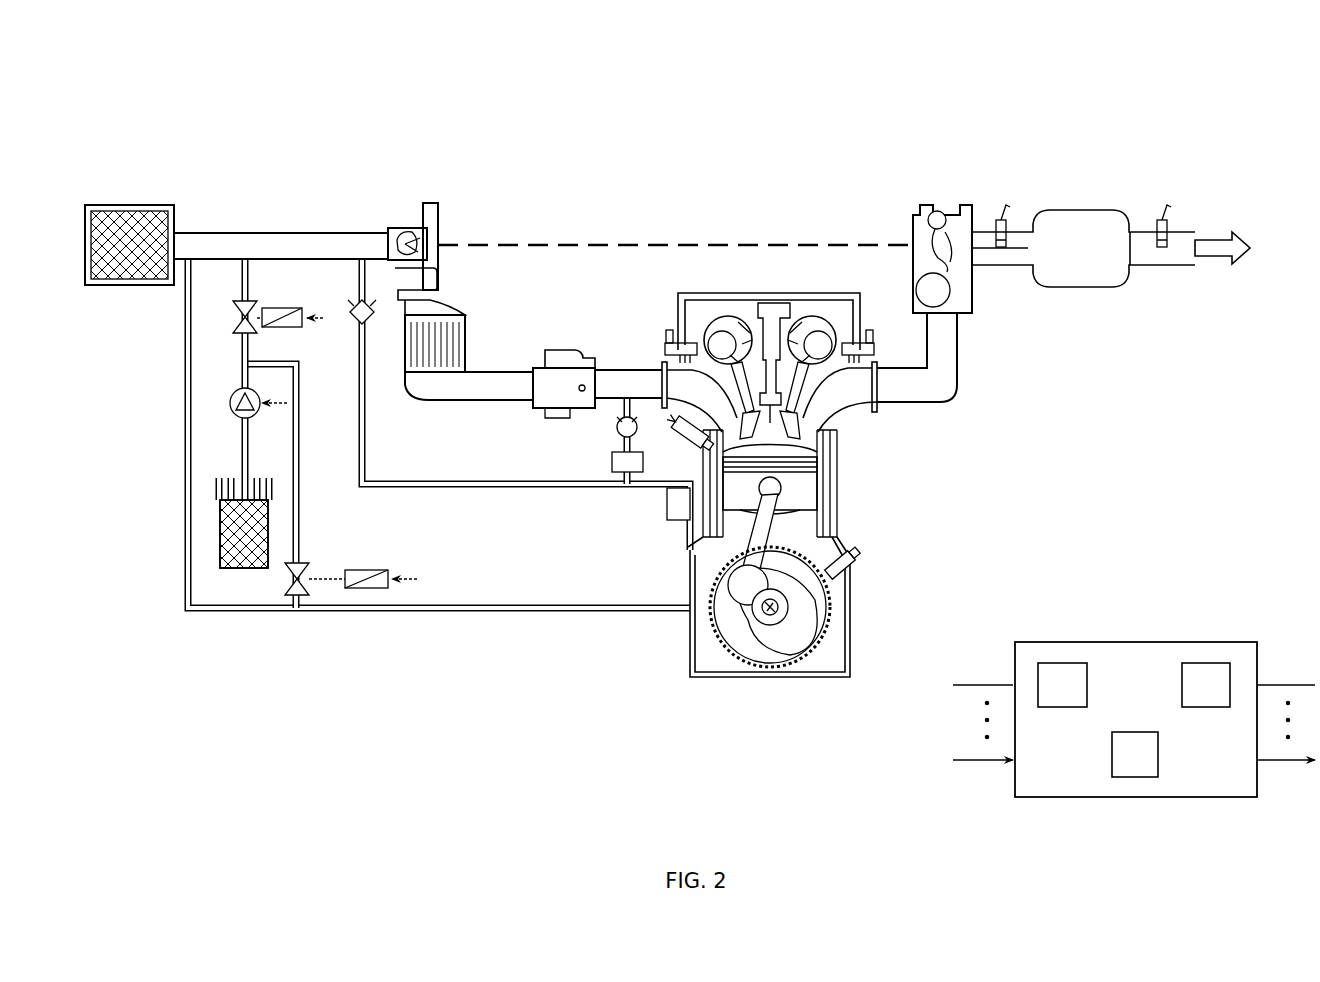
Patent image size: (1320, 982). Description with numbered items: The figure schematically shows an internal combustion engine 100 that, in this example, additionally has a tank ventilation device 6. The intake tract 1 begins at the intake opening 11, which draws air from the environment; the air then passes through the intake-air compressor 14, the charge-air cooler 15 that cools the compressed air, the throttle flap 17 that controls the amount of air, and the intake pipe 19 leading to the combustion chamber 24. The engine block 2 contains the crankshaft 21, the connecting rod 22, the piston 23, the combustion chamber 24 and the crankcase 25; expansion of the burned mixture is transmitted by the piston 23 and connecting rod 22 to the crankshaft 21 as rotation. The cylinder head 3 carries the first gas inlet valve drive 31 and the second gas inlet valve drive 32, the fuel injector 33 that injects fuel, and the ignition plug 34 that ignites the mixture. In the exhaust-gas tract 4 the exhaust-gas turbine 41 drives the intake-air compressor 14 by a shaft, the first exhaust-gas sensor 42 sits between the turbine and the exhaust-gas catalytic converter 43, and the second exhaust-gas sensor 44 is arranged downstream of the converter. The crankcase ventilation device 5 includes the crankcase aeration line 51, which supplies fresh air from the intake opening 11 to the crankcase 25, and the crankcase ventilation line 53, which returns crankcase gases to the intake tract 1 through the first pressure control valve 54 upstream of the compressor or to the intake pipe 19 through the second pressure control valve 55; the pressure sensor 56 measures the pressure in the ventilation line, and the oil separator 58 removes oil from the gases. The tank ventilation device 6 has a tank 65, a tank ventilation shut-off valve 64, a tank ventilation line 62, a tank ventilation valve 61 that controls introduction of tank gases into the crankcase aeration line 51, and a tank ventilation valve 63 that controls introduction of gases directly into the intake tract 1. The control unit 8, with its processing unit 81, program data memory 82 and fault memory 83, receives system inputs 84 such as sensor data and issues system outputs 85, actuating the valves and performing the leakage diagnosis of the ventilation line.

The internal combustion engine 100 is at (510, 146).
The intake tract 1 is at (288, 214).
The intake opening 11 is at (128, 205).
The intake-air compressor 14 is at (440, 213).
The charge-air cooler 15 is at (470, 345).
The throttle flap 17 is at (572, 352).
The intake pipe 19 is at (605, 370).
The engine block 2 is at (825, 468).
The crankshaft 21 is at (810, 635).
The connecting rod 22 is at (790, 516).
The piston 23 is at (820, 477).
The combustion chamber 24 is at (825, 447).
The crankcase 25 is at (862, 546).
The cylinder head 3 is at (728, 266).
The first gas inlet valve drive 31 is at (718, 320).
The second gas inlet valve drive 32 is at (822, 320).
The fuel injector 33 is at (680, 452).
The ignition plug 34 is at (765, 304).
The exhaust-gas tract 4 is at (1012, 315).
The exhaust-gas turbine 41 is at (937, 210).
The first exhaust-gas sensor 42 is at (1001, 216).
The exhaust-gas catalytic converter 43 is at (1080, 210).
The second exhaust-gas sensor 44 is at (1162, 216).
The crankcase ventilation device 5 is at (538, 521).
The crankcase aeration line 51 is at (185, 456).
The crankcase ventilation line 53 is at (565, 490).
The first pressure control valve 54 is at (358, 326).
The second pressure control valve 55 is at (615, 428).
The pressure sensor 56 is at (620, 474).
The oil separator 58 is at (675, 524).
The tank ventilation device 6 is at (218, 447).
The tank ventilation valve to the crankcase aeration line 61 is at (305, 575).
The tank ventilation line 62 is at (299, 458).
The tank ventilation valve to the intake tract 63 is at (232, 319).
The tank ventilation shut-off valve 64 is at (230, 404).
The tank 65 is at (268, 523).
The control unit 8 is at (1134, 678).
The processing unit 81 is at (1135, 732).
The program data memory 82 is at (1060, 663).
The fault memory 83 is at (1206, 663).
The system inputs 84 is at (980, 684).
The system outputs 85 is at (1285, 684).